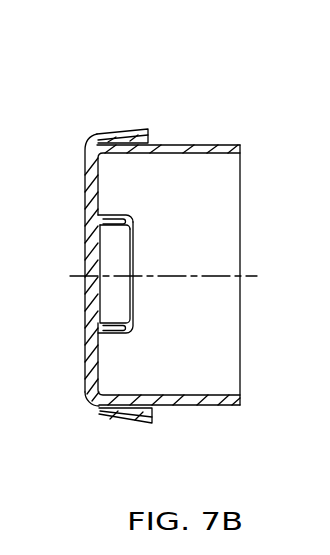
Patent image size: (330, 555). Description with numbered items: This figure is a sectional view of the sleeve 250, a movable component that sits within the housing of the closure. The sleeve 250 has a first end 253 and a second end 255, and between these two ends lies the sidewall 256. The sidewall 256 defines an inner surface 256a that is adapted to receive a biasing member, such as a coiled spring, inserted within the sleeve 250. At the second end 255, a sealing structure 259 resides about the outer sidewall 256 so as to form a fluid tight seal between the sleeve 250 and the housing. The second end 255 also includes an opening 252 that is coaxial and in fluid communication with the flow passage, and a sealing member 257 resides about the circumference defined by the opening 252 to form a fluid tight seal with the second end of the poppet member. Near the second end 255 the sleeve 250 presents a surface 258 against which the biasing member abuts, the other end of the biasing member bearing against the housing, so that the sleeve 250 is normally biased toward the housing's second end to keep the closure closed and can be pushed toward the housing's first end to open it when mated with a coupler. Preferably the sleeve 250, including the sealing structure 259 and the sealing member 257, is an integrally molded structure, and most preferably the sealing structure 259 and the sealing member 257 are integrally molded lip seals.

The sleeve 250 is at (180, 50).
The opening 252 is at (113, 292).
The first end 253 is at (239, 145).
The second end 255 is at (85, 381).
The sidewall 256 is at (192, 145).
The inner surface 256a is at (175, 405).
The sealing member 257 is at (99, 233).
The surface 258 is at (98, 187).
The sealing structure 259 is at (130, 132).